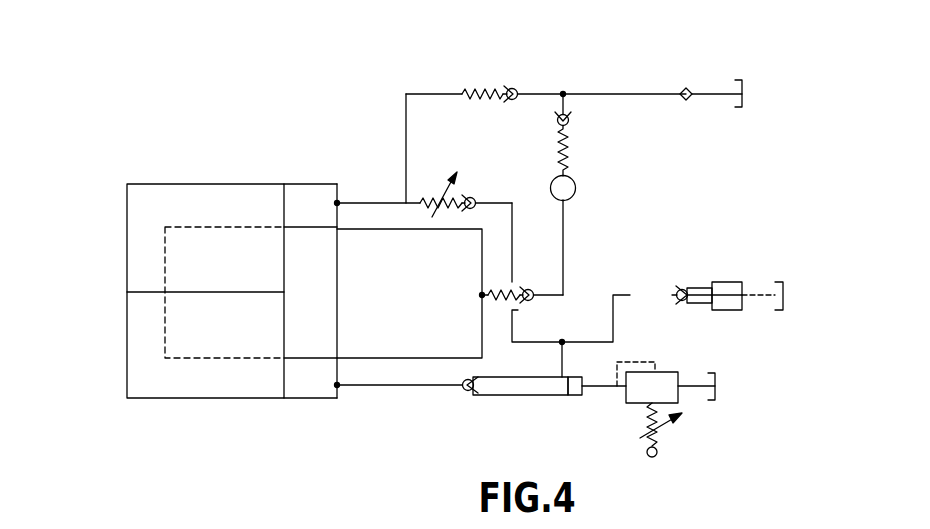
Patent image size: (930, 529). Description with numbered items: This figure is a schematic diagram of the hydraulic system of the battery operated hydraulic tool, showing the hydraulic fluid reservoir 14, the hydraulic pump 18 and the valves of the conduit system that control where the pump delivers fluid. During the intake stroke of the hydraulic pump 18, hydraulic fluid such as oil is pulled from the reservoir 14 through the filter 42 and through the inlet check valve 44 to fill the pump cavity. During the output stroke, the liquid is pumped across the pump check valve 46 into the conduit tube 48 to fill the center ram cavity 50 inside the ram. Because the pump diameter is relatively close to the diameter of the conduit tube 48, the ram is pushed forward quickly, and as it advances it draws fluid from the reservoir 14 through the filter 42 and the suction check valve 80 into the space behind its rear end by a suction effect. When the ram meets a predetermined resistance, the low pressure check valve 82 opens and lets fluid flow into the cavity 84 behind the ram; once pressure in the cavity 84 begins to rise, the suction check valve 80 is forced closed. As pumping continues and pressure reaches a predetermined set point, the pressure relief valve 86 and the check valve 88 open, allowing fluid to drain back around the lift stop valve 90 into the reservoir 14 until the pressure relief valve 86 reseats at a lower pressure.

The hydraulic fluid reservoir 14 is at (748, 108).
The hydraulic pump 18 is at (575, 186).
The filter 42 is at (680, 91).
The inlet check valve 44 is at (568, 118).
The pump check valve 46 is at (510, 288).
The conduit tube 48 is at (465, 352).
The center ram cavity 50 is at (238, 278).
The suction check valve 80 is at (481, 92).
The low pressure check valve 82 is at (447, 186).
The cavity 84 is at (312, 190).
The pressure relief valve 86 is at (667, 425).
The check valve 88 is at (478, 398).
The lift stop valve 90 is at (532, 397).